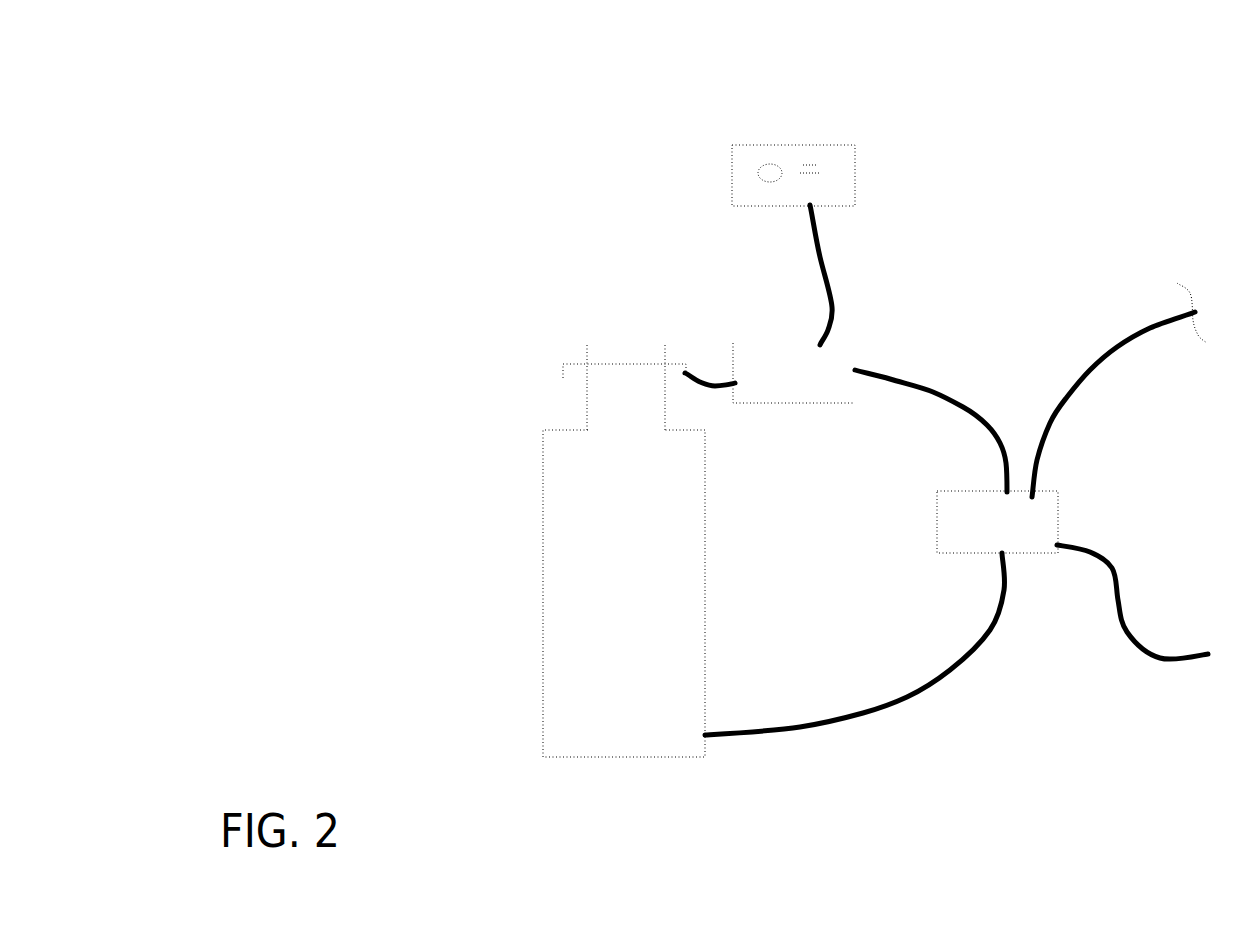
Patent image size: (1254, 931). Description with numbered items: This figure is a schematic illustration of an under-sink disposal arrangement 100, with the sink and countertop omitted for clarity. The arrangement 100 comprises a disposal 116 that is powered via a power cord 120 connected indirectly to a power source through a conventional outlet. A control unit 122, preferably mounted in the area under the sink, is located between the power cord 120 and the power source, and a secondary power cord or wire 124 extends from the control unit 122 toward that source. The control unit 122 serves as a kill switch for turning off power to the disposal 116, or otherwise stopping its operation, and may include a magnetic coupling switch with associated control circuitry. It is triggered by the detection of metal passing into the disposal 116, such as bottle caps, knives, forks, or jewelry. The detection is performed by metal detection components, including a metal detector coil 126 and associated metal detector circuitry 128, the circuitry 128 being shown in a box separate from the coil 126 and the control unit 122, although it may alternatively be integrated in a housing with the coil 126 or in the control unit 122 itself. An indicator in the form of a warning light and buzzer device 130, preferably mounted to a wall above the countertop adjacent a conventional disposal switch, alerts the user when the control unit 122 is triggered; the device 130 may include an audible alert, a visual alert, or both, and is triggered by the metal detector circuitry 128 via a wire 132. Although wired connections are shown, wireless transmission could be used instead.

The arrangement 100 is at (424, 47).
The disposal 116 is at (546, 605).
The power cord 120 is at (897, 706).
The control unit 122 is at (1032, 518).
The secondary power cord or wire 124 is at (1098, 368).
The metal detector coil 126 is at (570, 373).
The metal detector circuitry 128 is at (800, 383).
The warning light and buzzer device 130 is at (835, 181).
The wire 132 is at (827, 258).